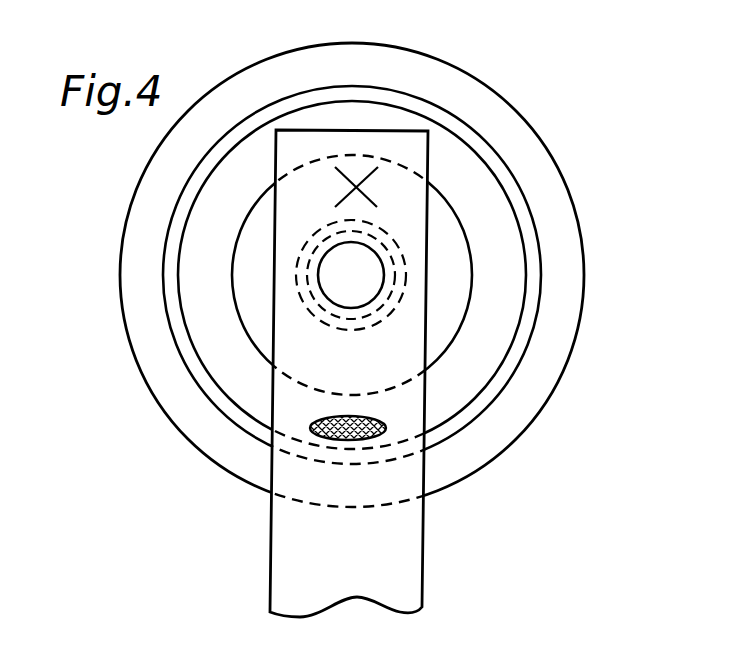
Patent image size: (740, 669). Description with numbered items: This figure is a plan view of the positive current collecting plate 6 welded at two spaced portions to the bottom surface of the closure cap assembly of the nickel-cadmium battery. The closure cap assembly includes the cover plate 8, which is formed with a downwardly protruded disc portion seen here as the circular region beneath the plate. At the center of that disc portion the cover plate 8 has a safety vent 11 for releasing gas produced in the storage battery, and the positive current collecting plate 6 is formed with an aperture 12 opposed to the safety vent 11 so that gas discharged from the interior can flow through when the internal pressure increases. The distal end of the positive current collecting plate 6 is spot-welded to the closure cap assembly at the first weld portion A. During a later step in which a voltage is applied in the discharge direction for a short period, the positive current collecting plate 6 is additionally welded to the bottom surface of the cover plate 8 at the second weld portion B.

The positive current collecting plate 6 is at (378, 560).
The cover plate 8 is at (448, 308).
The safety vent 11 is at (354, 271).
The aperture 12 is at (387, 268).
The first weld portion A is at (357, 185).
The second weld portion B is at (388, 425).